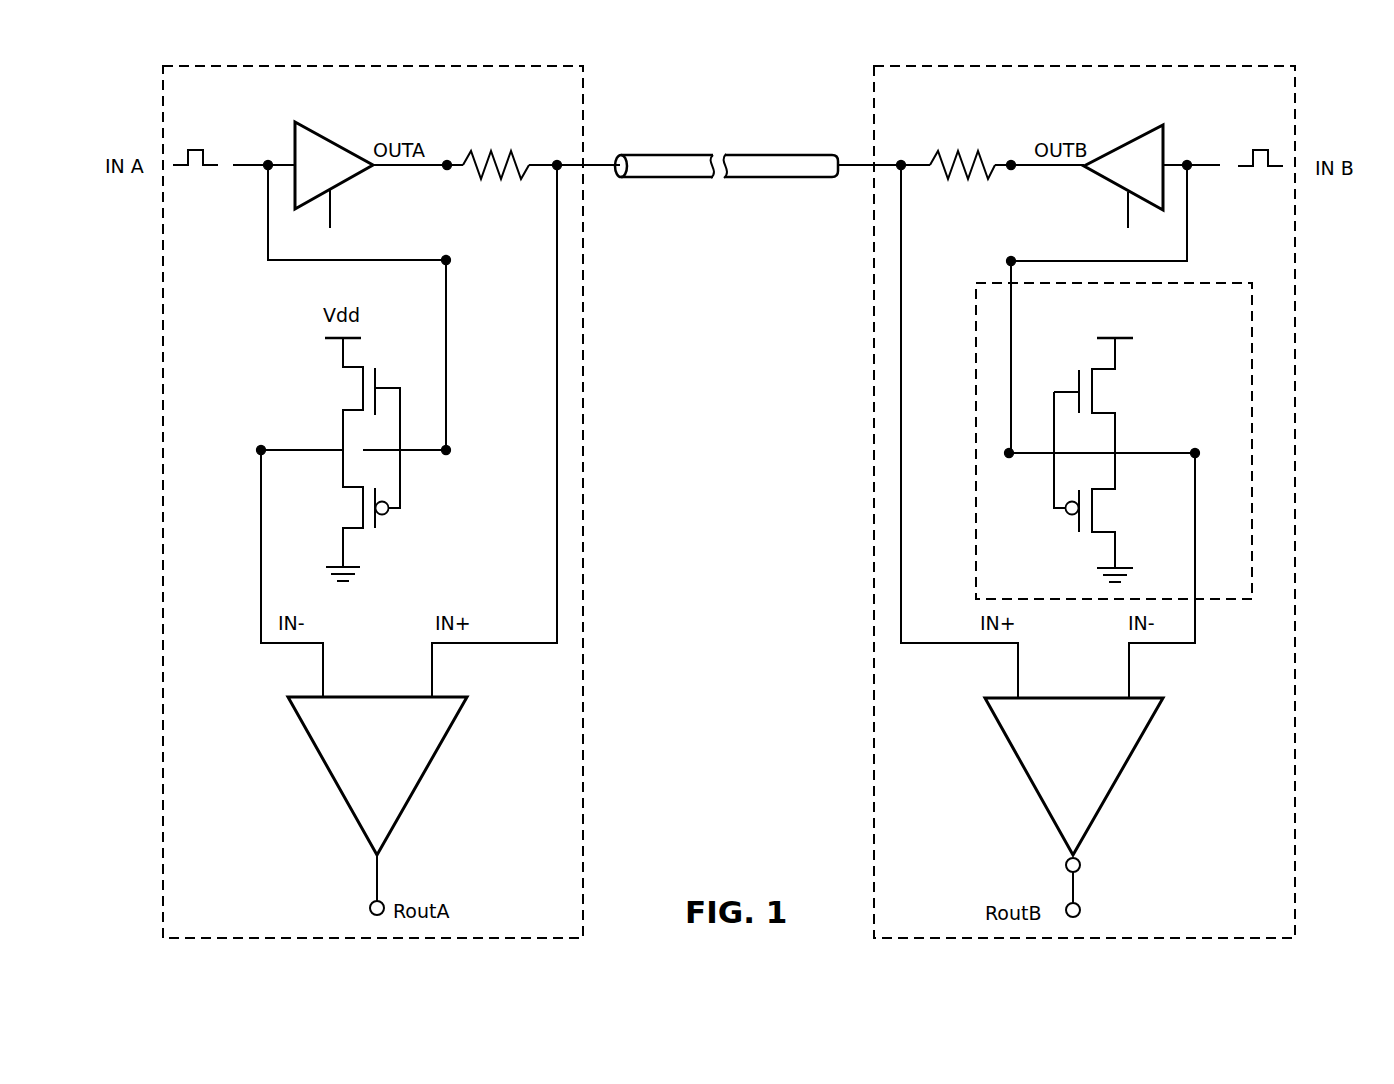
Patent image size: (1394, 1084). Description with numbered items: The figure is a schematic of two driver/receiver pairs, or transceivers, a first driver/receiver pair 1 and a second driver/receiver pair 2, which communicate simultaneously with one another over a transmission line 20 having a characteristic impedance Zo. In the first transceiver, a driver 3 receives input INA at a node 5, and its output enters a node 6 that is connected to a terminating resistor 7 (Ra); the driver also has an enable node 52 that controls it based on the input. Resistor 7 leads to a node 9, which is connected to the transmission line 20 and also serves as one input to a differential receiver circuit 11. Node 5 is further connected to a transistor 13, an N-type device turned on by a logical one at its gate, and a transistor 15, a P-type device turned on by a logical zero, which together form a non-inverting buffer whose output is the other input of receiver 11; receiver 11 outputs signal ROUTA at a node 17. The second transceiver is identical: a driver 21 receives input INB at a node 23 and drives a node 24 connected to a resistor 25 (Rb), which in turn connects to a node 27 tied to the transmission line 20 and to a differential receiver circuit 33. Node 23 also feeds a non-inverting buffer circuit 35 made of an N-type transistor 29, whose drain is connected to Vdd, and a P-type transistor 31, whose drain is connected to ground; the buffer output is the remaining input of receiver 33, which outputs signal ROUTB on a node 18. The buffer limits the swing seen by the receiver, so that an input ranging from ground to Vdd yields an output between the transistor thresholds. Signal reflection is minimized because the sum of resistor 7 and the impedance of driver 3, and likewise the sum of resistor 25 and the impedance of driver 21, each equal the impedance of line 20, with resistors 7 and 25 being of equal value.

The driver/receiver pair 1 is at (163, 112).
The driver/receiver pair 2 is at (1295, 112).
The driver 3 is at (295, 140).
The node 5 is at (446, 260).
The node 6 is at (447, 157).
The terminating resistor 7 is at (530, 157).
The node 9 is at (558, 158).
The differential receiver circuit 11 is at (386, 808).
The transistor 13 is at (345, 392).
The transistor 15 is at (392, 516).
The node 17 is at (368, 908).
The node 18 is at (1081, 910).
The transmission line 20 is at (656, 156).
The driver 21 is at (1163, 145).
The node 23 is at (1006, 261).
The node 24 is at (1009, 158).
The resistor 25 is at (932, 156).
The node 27 is at (900, 158).
The transistor 29 is at (1110, 394).
The transistor 31 is at (1062, 516).
The differential receiver circuit 33 is at (1082, 808).
The non-inverting buffer circuit 35 is at (1225, 333).
The enable node 52 is at (335, 208).